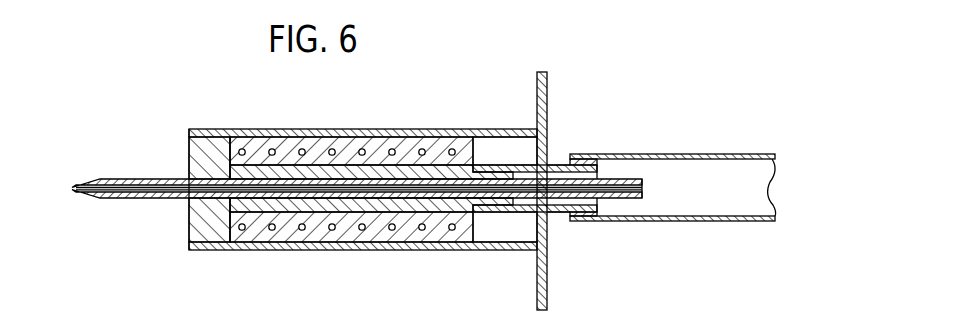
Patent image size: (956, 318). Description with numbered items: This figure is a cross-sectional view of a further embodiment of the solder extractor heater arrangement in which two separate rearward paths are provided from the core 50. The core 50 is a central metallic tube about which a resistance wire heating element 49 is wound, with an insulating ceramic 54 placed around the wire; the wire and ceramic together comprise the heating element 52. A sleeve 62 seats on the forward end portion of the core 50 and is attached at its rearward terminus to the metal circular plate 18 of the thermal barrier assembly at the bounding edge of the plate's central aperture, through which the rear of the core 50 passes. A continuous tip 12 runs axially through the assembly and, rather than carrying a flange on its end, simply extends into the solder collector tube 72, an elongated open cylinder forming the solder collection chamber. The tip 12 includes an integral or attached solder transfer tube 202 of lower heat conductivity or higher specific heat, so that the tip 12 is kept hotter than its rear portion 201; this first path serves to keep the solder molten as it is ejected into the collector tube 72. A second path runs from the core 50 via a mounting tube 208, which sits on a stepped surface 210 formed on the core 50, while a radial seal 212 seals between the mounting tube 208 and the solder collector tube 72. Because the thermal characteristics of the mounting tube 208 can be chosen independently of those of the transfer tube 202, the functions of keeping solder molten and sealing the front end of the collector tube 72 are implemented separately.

The tip 12 is at (147, 178).
The circular plate 18 is at (535, 92).
The resistance wire heating element 49 is at (275, 136).
The core 50 is at (437, 206).
The heating element 52 is at (347, 252).
The insulating ceramic 54 is at (358, 132).
The sleeve 62 is at (441, 132).
The solder collector tube 72 is at (712, 222).
The rear portion 201 is at (645, 188).
The solder transfer tube 202 is at (612, 210).
The mounting tube 208 is at (553, 164).
The stepped surface 210 is at (493, 168).
The radial seal 212 is at (592, 157).